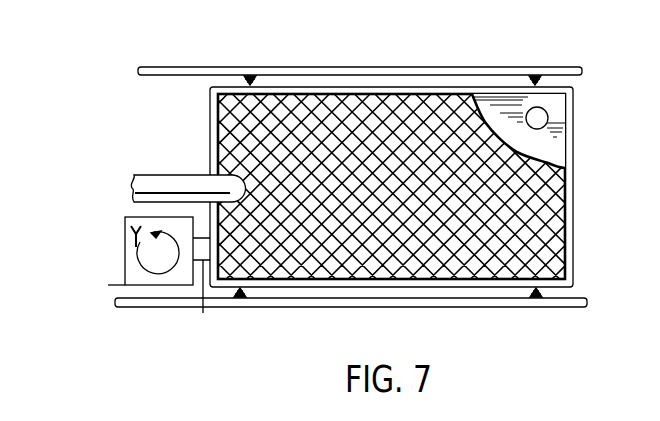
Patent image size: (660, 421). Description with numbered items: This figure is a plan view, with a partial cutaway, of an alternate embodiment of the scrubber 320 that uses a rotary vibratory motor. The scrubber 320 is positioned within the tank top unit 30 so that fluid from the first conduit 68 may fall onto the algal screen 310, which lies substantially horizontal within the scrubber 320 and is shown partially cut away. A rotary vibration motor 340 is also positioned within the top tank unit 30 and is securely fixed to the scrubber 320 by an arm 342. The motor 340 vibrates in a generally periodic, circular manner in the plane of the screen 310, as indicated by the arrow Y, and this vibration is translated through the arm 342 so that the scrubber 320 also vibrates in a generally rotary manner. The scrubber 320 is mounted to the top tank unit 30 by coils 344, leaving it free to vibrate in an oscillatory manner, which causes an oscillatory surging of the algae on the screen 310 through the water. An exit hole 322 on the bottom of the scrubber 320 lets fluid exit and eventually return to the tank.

The tank top unit 30 is at (223, 52).
The first conduit 68 is at (170, 185).
The algal screen 310 is at (455, 94).
The scrubber 320 is at (293, 100).
The exit hole 322 is at (549, 113).
The rotary vibration motor 340 is at (125, 250).
The arm 342 is at (203, 313).
The coils 344 is at (254, 82).